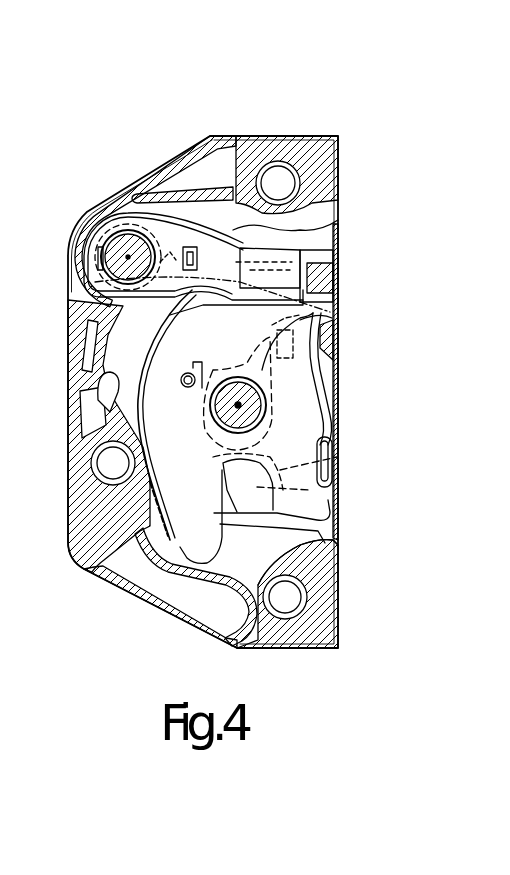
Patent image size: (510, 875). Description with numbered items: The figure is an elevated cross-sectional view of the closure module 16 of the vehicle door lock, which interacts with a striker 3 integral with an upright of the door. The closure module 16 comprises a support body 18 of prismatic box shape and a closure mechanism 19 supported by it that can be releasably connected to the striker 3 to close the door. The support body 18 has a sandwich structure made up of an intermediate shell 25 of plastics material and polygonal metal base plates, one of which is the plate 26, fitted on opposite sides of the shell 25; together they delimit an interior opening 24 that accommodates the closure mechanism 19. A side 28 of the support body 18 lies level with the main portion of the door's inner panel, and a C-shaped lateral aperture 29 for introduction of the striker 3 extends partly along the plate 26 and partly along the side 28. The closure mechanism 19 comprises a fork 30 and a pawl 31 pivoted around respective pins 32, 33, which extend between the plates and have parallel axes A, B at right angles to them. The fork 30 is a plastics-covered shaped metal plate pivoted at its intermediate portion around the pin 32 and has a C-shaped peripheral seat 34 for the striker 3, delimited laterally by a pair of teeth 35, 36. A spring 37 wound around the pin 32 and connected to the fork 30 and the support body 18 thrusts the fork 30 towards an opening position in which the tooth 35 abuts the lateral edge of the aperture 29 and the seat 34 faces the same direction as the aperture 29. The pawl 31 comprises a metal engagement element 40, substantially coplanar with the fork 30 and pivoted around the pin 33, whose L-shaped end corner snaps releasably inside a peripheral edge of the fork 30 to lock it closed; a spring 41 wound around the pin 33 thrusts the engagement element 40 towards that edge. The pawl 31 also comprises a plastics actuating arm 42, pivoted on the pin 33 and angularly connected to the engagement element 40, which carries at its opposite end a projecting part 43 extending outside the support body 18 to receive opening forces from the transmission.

The closure module 16 is at (260, 108).
The support body 18 is at (334, 136).
The closure mechanism 19 is at (138, 345).
The opening 24 is at (108, 406).
The intermediate shell 25 is at (90, 498).
The metal base plate 26 is at (288, 548).
The side 28 is at (118, 593).
The lateral aperture 29 is at (306, 519).
The striker 3 is at (322, 488).
The fork 30 is at (297, 402).
The pawl 31 is at (176, 238).
The pin 32 is at (262, 390).
The pin 33 is at (124, 232).
The seat 34 is at (240, 497).
The tooth 35 is at (282, 477).
The tooth 36 is at (188, 543).
The spring 37 is at (328, 422).
The engagement element 40 is at (186, 232).
The spring 41 is at (84, 296).
The actuating arm 42 is at (338, 226).
The projecting part 43 is at (340, 290).
The axis A is at (333, 314).
The axis B is at (105, 233).